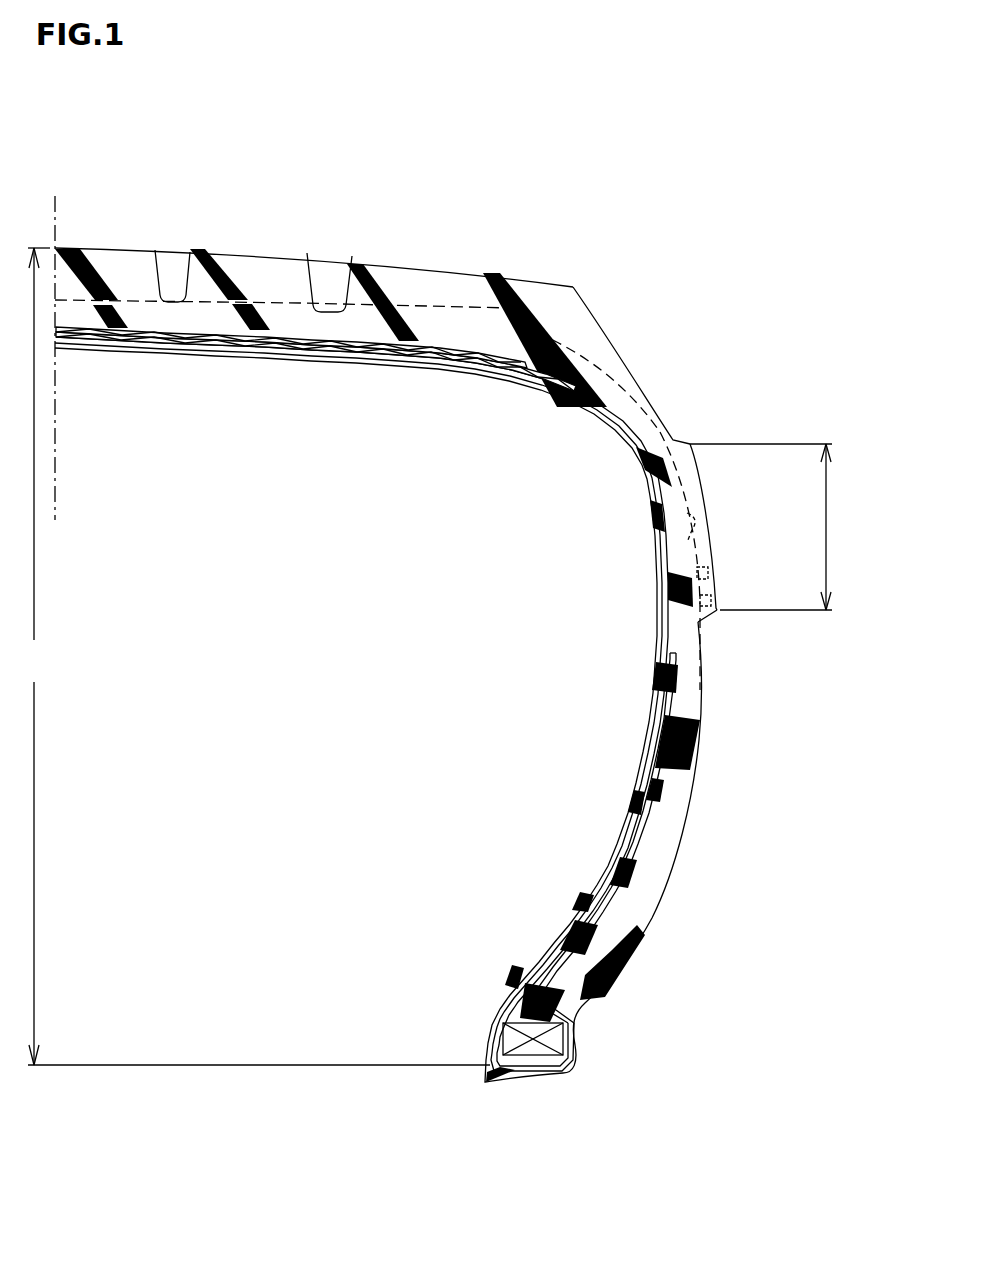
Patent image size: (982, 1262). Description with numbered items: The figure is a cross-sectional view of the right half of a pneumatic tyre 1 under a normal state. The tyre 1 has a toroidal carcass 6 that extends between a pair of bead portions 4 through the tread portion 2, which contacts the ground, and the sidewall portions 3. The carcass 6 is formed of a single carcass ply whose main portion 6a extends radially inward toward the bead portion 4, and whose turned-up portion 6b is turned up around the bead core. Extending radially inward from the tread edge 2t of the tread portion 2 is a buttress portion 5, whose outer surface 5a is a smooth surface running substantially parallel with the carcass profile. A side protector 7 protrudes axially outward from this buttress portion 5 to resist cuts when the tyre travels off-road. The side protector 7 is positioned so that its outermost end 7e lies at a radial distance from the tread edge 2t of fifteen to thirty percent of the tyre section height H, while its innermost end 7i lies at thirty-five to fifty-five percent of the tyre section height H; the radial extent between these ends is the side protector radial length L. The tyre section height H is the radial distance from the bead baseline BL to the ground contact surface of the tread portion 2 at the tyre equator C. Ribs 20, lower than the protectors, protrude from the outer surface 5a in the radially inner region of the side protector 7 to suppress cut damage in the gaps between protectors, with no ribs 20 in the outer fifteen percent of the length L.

The pneumatic tyre 1 is at (552, 212).
The tread portion 2 is at (452, 267).
The tread edge 2t is at (573, 287).
The sidewall portion 3 is at (700, 705).
The bead portion 4 is at (598, 1035).
The buttress portion 5 is at (745, 393).
The outer surface of the buttress portion 5a is at (687, 537).
The carcass 6 is at (520, 723).
The main portion 6a is at (630, 833).
The turned-up portion 6b is at (670, 748).
The side protector 7 is at (700, 487).
The outermost end of the side protector 7e is at (692, 443).
The innermost end of the side protector 7i is at (717, 610).
The rib 20 is at (708, 572).
The tyre section height H is at (37, 656).
The side protector radial length L is at (835, 527).
The tyre equator C is at (56, 344).
The bead baseline BL is at (258, 1066).